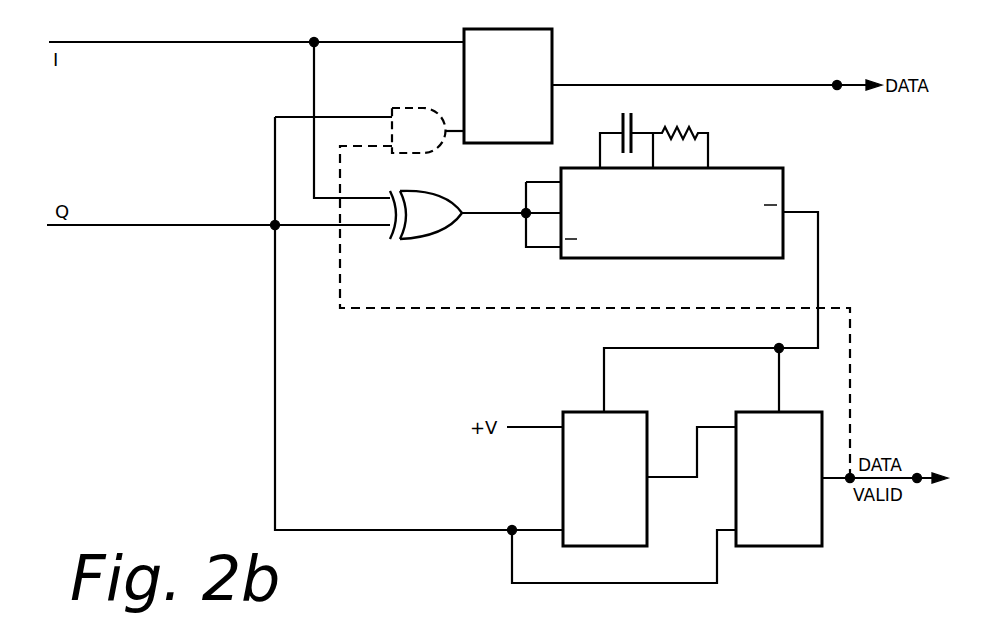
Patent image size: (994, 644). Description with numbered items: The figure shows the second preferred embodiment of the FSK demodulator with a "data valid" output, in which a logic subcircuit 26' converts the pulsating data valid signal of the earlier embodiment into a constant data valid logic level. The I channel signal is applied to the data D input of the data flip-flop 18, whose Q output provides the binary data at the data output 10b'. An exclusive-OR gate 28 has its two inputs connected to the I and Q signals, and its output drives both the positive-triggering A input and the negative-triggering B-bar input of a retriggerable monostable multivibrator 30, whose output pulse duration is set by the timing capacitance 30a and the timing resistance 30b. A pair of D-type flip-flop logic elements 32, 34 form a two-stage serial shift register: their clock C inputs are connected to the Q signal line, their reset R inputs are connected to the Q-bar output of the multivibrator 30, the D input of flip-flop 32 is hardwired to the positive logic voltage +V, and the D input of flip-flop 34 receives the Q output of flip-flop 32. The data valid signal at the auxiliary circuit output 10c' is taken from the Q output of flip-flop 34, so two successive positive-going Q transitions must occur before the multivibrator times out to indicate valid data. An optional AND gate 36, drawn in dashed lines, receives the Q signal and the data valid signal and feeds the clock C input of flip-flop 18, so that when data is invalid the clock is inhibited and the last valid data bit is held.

The flip-flop 18 is at (552, 46).
The AND gate 36 is at (416, 108).
The exclusive-OR gate 28 is at (425, 232).
The retriggerable monostable multivibrator 30 is at (745, 166).
The timing capacitance 30a is at (622, 129).
The timing resistance 30b is at (672, 130).
The D-type flip-flop 32 is at (647, 498).
The D-type flip-flop 34 is at (782, 545).
The data output 10b' is at (855, 111).
The auxiliary circuit output 10c' is at (926, 516).
The logic subcircuit 26' is at (169, 443).